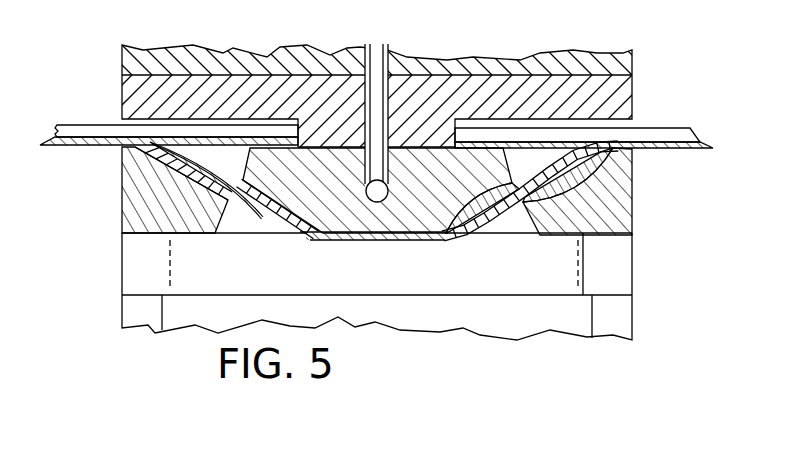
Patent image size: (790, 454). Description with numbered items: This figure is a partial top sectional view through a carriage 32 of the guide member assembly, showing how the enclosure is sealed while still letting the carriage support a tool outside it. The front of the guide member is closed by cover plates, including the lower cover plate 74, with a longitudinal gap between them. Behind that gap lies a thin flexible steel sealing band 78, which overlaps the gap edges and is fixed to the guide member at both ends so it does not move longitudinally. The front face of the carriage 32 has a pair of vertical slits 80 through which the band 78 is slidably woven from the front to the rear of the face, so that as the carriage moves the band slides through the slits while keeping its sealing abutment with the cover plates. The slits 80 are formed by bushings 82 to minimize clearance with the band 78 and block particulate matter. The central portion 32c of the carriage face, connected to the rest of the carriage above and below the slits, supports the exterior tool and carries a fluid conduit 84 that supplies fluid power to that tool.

The carriage 32 is at (632, 277).
The central portion of the front face of the carriage 32c is at (395, 208).
The lower cover plate 74 is at (103, 124).
The sealing band 78 is at (99, 146).
The vertical slits 80 is at (237, 193).
The bushings 82 is at (200, 180).
The fluid conduit 84 is at (413, 74).